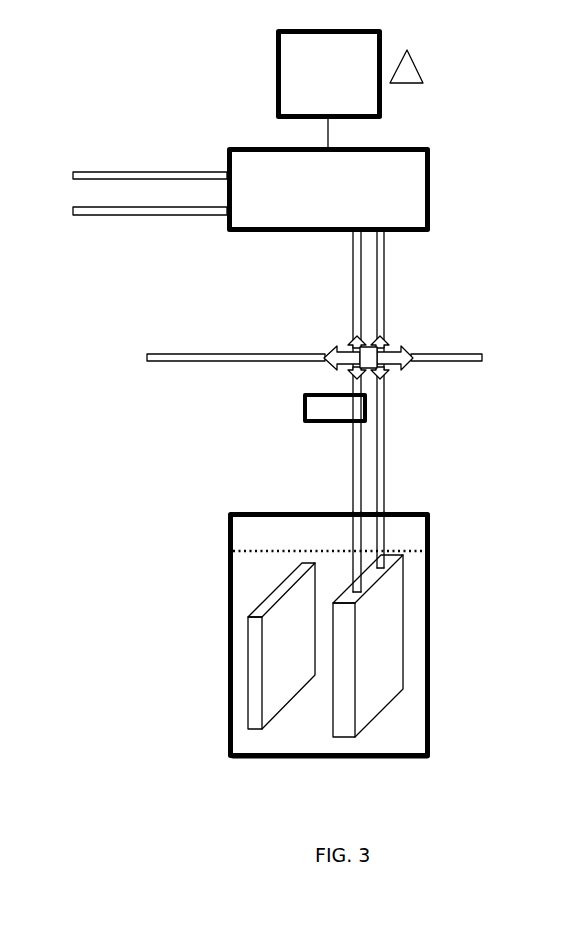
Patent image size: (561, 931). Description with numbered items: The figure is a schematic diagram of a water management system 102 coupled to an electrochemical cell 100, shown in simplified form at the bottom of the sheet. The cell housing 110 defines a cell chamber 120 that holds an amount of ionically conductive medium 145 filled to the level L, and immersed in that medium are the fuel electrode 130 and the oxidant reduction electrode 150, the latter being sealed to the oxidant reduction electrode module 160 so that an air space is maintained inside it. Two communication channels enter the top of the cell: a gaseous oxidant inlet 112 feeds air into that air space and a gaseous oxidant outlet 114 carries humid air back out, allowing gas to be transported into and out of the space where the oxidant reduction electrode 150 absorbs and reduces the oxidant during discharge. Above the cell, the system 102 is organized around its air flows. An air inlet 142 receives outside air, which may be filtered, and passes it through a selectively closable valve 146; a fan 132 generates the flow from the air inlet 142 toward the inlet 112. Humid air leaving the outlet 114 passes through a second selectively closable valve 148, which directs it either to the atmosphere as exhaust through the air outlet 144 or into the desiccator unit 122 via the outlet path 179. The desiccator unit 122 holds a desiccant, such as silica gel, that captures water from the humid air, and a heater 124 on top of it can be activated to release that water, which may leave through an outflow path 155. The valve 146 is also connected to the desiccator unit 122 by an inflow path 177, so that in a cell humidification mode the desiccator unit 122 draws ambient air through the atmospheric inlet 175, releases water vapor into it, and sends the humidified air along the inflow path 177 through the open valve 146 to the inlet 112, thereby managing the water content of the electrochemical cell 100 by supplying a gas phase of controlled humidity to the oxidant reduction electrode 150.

The electrochemical cell 100 is at (366, 635).
The water management system 102 is at (140, 92).
The cell housing 110 is at (432, 613).
The gaseous oxidant inlet 112 is at (355, 511).
The gaseous oxidant outlet 114 is at (386, 511).
The cell chamber 120 is at (267, 738).
The desiccator unit 122 is at (349, 205).
The heater 124 is at (345, 75).
The fuel electrode 130 is at (255, 690).
The fan 132 is at (303, 407).
The air inlet 142 is at (200, 357).
The air outlet 144 is at (462, 355).
The ionically conductive medium 145 is at (260, 571).
The selectively closable valve 146 is at (352, 340).
The selectively closable valve 148 is at (386, 340).
The oxidant reduction electrode 150 is at (391, 639).
The outflow path 155 is at (106, 173).
The oxidant reduction electrode module 160 is at (343, 741).
The atmospheric inlet 175 is at (113, 212).
The inflow path 177 is at (354, 270).
The outlet path 179 is at (385, 272).
The level L is at (227, 552).